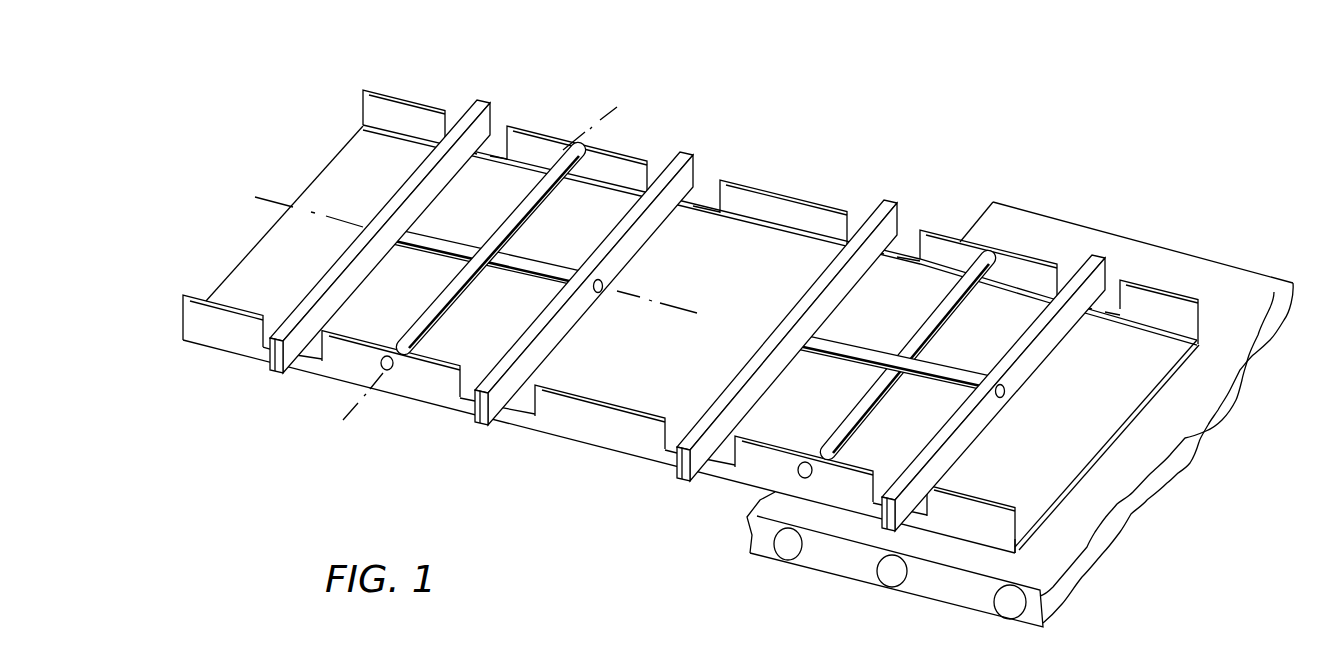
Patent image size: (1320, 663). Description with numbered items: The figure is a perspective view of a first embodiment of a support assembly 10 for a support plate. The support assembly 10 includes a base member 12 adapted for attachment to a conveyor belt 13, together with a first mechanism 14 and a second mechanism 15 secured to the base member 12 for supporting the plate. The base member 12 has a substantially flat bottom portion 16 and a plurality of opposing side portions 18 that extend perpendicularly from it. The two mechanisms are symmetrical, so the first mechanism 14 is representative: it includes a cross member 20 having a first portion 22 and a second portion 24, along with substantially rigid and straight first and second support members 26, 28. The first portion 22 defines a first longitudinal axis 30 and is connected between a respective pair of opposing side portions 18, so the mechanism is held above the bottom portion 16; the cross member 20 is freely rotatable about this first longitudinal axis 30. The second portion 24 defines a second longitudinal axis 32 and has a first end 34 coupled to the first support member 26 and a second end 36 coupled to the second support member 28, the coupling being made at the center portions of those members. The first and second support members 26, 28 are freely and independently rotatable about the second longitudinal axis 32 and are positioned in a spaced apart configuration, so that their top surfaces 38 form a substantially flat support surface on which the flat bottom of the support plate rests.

The support assembly 10 is at (813, 137).
The base member 12 is at (675, 339).
The conveyor belt 13 is at (1077, 232).
The first mechanism 14 is at (472, 226).
The second mechanism 15 is at (890, 331).
The bottom portion 16 is at (647, 348).
The side portions 18 is at (385, 105).
The cross member 20 is at (506, 231).
The first portion 22 is at (580, 160).
The second portion 24 is at (427, 237).
The first support member 26 is at (615, 270).
The second support member 28 is at (492, 118).
The first longitudinal axis 30 is at (613, 108).
The second longitudinal axis 32 is at (265, 197).
The first end 34 is at (607, 287).
The second end 36 is at (370, 223).
The top surfaces 38 is at (483, 127).